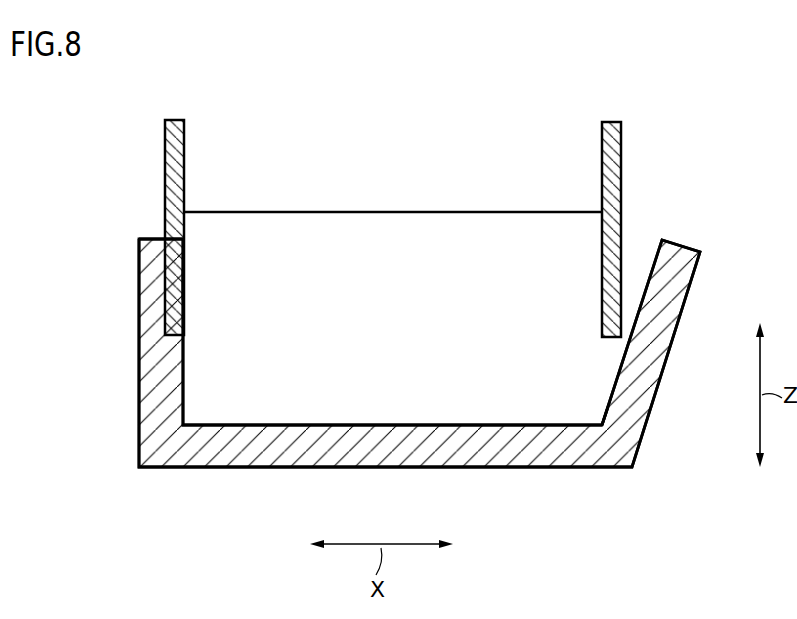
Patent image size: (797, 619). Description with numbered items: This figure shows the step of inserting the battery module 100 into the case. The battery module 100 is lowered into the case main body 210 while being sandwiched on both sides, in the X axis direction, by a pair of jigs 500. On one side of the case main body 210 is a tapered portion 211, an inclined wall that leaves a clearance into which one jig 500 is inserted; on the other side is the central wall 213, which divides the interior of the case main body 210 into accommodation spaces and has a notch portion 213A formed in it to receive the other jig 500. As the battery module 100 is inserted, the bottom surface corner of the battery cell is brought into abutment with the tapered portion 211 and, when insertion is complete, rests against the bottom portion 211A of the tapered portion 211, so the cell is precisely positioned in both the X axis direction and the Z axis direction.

The battery module 100 is at (391, 228).
The case main body 210 is at (700, 310).
The tapered portion 211 is at (650, 365).
The bottom portion of tapered portion 211A is at (602, 427).
The central wall 213 is at (150, 379).
The notch portion 213A is at (178, 299).
The jig 500 is at (172, 118).